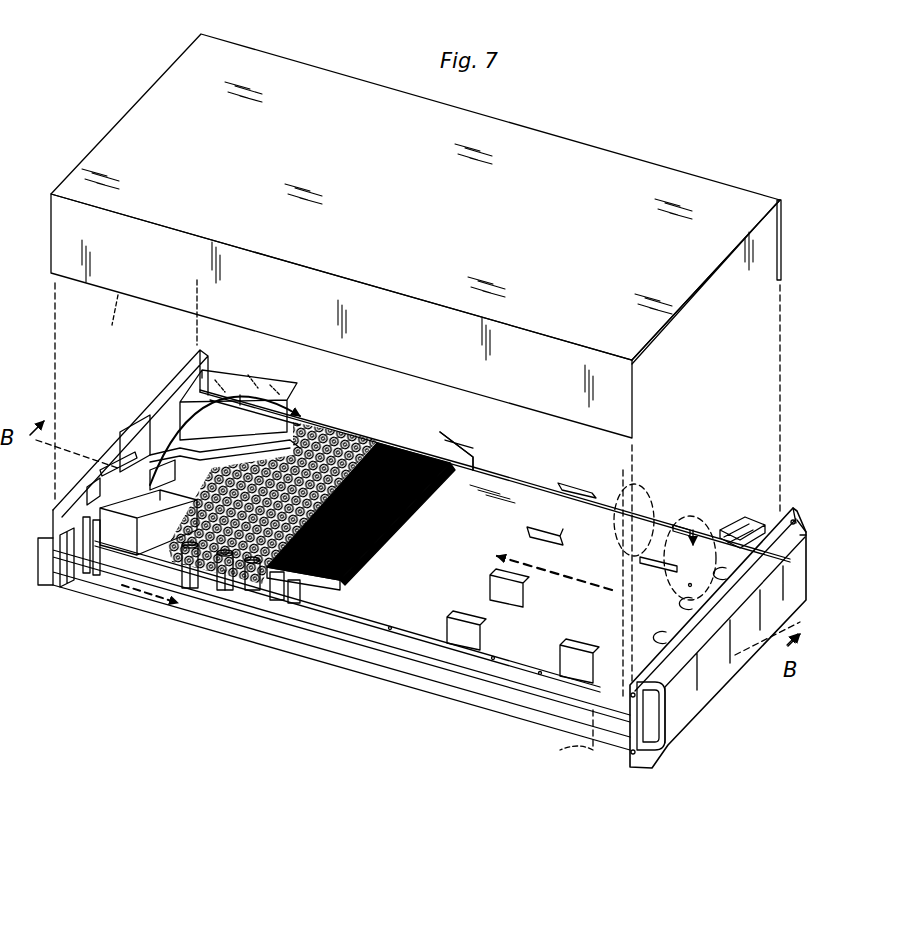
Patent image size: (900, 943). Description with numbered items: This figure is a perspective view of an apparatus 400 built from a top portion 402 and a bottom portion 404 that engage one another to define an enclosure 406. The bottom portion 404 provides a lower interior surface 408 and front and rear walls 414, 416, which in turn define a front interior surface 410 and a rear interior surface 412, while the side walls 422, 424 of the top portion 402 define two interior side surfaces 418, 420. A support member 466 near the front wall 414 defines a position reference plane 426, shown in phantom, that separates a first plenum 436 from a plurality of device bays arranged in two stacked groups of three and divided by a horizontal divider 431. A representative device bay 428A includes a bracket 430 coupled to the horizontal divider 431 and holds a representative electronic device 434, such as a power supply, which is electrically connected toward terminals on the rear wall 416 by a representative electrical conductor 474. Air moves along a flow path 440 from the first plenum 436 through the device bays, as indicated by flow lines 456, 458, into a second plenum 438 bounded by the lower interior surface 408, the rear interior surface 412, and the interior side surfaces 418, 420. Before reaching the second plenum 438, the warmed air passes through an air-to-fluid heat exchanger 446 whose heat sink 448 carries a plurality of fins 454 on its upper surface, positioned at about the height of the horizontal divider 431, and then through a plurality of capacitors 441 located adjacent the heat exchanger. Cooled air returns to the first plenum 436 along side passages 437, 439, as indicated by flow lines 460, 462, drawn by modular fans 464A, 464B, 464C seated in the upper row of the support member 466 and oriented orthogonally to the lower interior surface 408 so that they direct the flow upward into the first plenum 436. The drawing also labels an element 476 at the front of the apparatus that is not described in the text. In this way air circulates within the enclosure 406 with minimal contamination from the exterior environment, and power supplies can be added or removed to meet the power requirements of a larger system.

The apparatus 400 is at (790, 408).
The top portion 402 is at (603, 160).
The bottom portion 404 is at (510, 712).
The enclosure 406 is at (462, 445).
The lower interior surface 408 is at (175, 595).
The front interior surface 410 is at (792, 638).
The rear interior surface 412 is at (170, 392).
The front wall 414 is at (777, 518).
The rear wall 416 is at (140, 430).
The interior side surface 418 is at (142, 312).
The interior side surface 420 is at (755, 268).
The side wall 422 is at (615, 410).
The side wall 424 is at (781, 250).
The position reference plane 426 is at (579, 611).
The device bay 428A is at (473, 548).
The bracket 430 is at (492, 588).
The horizontal divider 431 is at (505, 660).
The electronic device 434 is at (560, 568).
The first plenum 436 is at (681, 540).
The side passage 437 is at (290, 612).
The second plenum 438 is at (122, 470).
The side passage 439 is at (570, 482).
The flow path 440 is at (565, 592).
The plurality of capacitors 441 is at (360, 425).
The air-to-fluid heat exchanger 446 is at (380, 443).
The heat sink 448 is at (258, 595).
The plurality of fins 454 is at (317, 588).
The flow line 456 is at (625, 510).
The flow line 458 is at (410, 452).
The flow line 460 is at (100, 520).
The flow line 462 is at (205, 430).
The fan 464A is at (665, 635).
The fan 464B is at (690, 598).
The fan 464C is at (725, 565).
The support member 466 is at (713, 548).
The electrical conductor 474 is at (240, 455).
The handle 476 is at (660, 725).